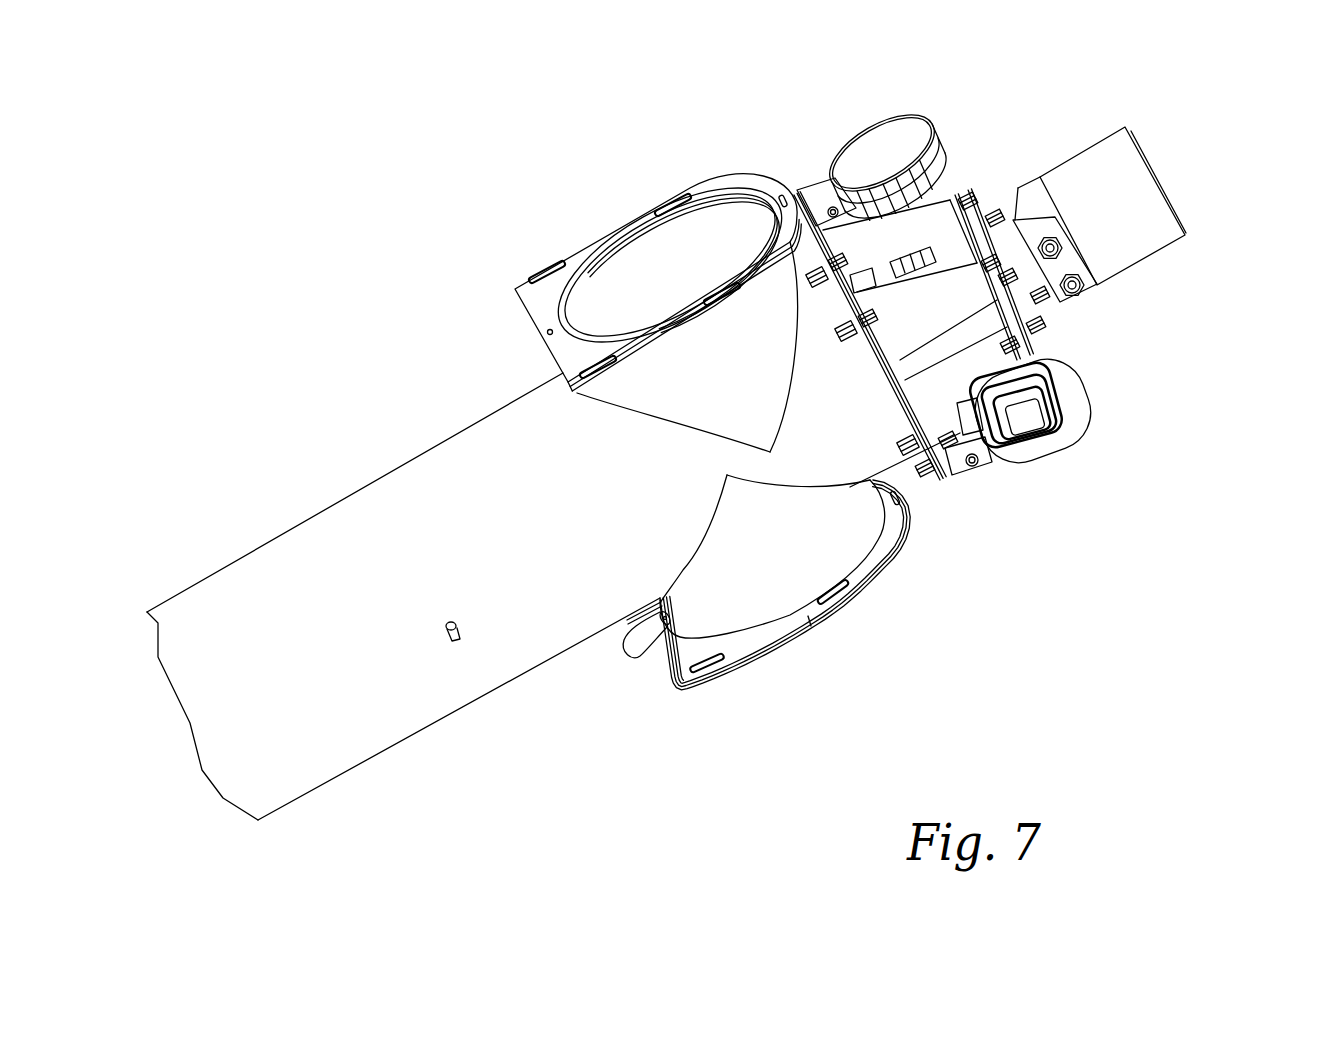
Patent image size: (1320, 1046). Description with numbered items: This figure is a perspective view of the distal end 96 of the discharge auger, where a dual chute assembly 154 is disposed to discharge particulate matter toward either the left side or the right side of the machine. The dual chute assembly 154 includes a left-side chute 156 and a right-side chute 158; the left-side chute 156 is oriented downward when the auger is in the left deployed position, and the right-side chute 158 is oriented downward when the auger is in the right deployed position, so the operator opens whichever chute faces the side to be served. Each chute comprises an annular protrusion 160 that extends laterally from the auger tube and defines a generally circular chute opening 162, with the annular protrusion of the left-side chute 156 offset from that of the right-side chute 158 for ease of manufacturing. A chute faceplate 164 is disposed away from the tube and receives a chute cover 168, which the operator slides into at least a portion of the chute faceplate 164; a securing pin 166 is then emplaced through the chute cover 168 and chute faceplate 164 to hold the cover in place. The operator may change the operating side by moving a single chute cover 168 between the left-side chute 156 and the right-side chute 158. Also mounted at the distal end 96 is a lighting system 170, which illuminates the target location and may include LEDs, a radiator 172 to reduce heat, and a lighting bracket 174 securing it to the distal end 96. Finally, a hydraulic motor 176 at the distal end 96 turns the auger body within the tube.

The distal end 96 is at (411, 203).
The dual chute assembly 154 is at (712, 156).
The left-side chute 156 is at (736, 616).
The right-side chute 158 is at (582, 231).
The annular protrusion 160 is at (713, 415).
The chute opening 162 is at (735, 225).
The chute faceplate 164 is at (513, 296).
The securing pin 166 is at (633, 640).
The chute cover 168 is at (661, 688).
The lighting system 170 is at (924, 97).
The radiator 172 is at (940, 163).
The lighting bracket 174 is at (973, 463).
The hydraulic motor 176 is at (1147, 208).